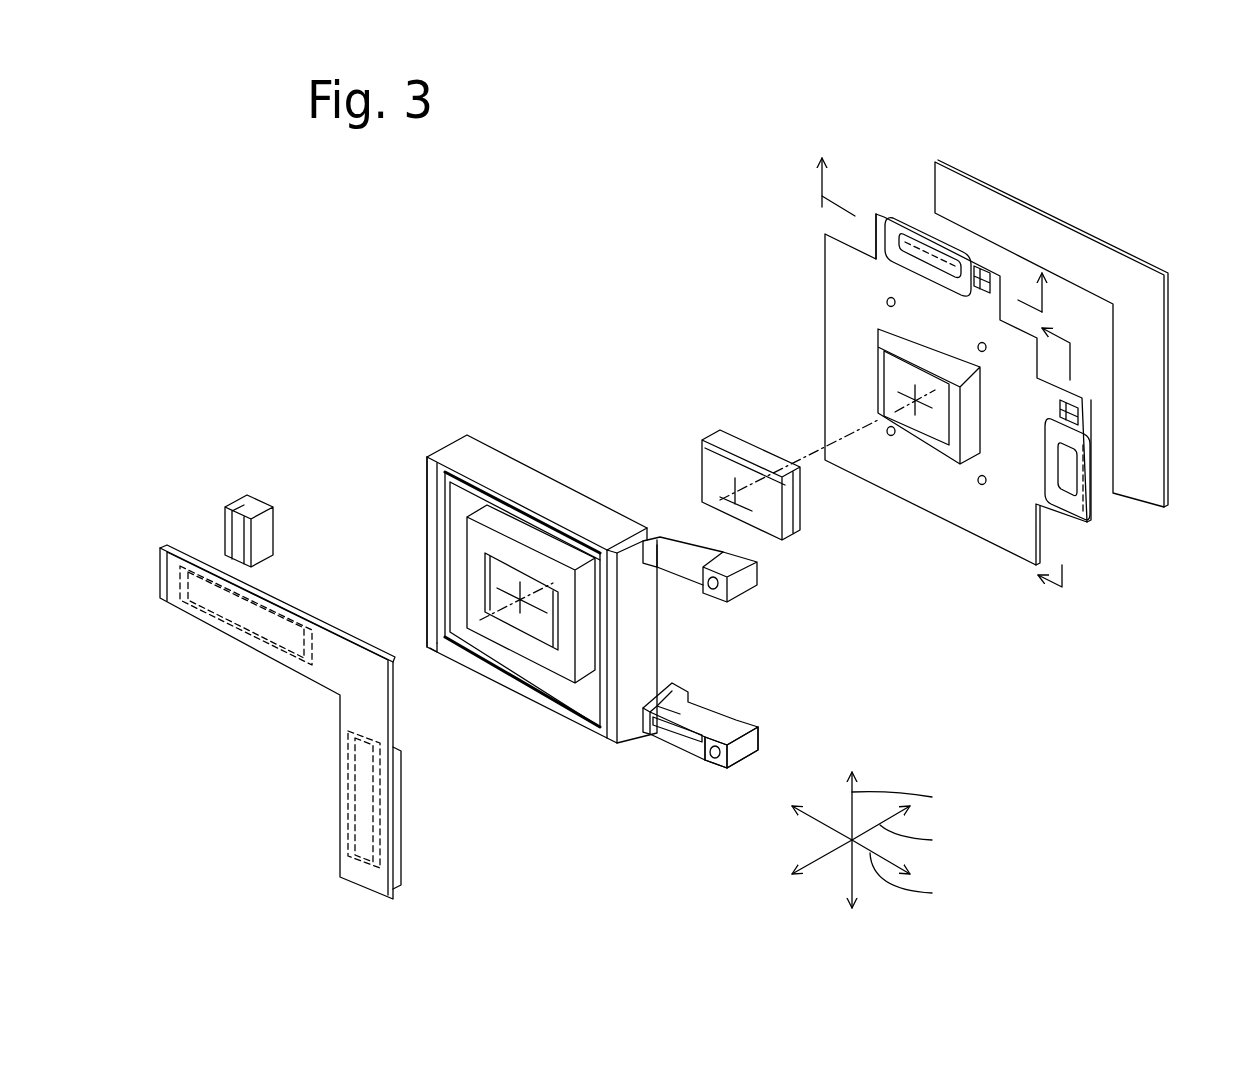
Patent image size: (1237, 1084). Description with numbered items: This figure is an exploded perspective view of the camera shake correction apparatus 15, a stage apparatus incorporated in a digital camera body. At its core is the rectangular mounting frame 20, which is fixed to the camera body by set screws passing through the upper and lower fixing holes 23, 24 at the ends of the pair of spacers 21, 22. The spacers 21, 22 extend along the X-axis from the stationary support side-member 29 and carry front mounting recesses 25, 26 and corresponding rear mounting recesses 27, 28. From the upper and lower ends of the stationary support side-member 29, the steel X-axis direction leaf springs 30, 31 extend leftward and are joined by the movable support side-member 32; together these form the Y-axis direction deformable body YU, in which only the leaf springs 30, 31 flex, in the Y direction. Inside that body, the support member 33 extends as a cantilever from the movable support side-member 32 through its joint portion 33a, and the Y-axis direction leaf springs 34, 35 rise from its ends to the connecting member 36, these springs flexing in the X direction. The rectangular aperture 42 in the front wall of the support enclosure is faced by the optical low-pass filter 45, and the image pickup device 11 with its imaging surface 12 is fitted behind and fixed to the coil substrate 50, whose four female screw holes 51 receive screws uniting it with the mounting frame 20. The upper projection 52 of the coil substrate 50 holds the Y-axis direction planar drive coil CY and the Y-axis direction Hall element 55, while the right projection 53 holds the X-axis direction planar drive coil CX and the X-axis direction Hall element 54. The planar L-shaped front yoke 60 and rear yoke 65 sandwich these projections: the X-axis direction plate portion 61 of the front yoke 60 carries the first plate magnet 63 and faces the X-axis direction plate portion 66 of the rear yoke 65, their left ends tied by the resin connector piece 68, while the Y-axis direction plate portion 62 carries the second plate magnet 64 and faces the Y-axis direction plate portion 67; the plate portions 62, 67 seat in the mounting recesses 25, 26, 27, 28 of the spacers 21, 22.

The camera shake correction apparatus 15 is at (623, 258).
The rectangular mounting frame 20 is at (493, 368).
The Y-axis direction deformable body YU is at (550, 500).
The X-axis direction leaf spring 30 is at (472, 465).
The connecting member 36 is at (510, 505).
The movable support side-member 32 is at (427, 475).
The support member 33 is at (533, 703).
The joint portion 33a is at (435, 645).
The X-axis direction leaf spring 31 is at (575, 723).
The Y-axis direction leaf spring 34 is at (600, 737).
The Y-axis direction leaf spring 35 is at (440, 570).
The rectangular aperture 42 is at (487, 567).
The stationary support side-member 29 is at (640, 633).
The rear mounting recess 27 is at (690, 530).
The front mounting recess 25 is at (670, 560).
The upper fixing hole 23 is at (740, 578).
The spacer 21 is at (732, 600).
The rear mounting recess 28 is at (712, 717).
The front mounting recess 26 is at (683, 732).
The lower fixing hole 24 is at (757, 747).
The spacer 22 is at (730, 758).
The optical low-pass filter 45 is at (727, 457).
The image pickup device 11 is at (853, 391).
The imaging surface 12 is at (880, 395).
The coil substrate 50 is at (982, 525).
The female screw holes 51 is at (888, 300).
The upper projection 52 is at (878, 214).
The Y-axis direction planar drive coil CY is at (905, 222).
The Y-axis direction Hall element 55 is at (978, 268).
The right projection 53 is at (1080, 522).
The X-axis direction Hall element 54 is at (1080, 403).
The X-axis direction planar drive coil CX is at (1088, 496).
The rear yoke 65 is at (1109, 260).
The X-axis direction plate portion 66 is at (1073, 244).
The Y-axis direction plate portion 67 is at (1160, 353).
The front yoke 60 is at (350, 713).
The X-axis direction plate portion 61 is at (168, 582).
The first plate magnet 63 is at (210, 610).
The second plate magnet 64 is at (348, 818).
The Y-axis direction plate portion 62 is at (397, 889).
The connector piece 68 is at (247, 495).